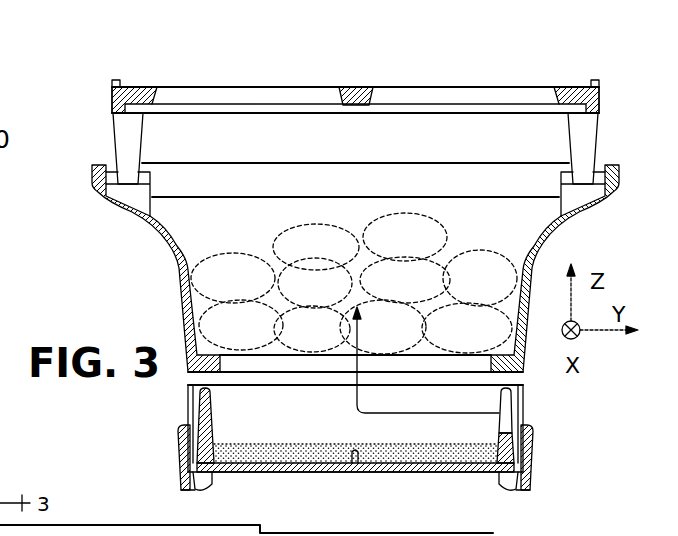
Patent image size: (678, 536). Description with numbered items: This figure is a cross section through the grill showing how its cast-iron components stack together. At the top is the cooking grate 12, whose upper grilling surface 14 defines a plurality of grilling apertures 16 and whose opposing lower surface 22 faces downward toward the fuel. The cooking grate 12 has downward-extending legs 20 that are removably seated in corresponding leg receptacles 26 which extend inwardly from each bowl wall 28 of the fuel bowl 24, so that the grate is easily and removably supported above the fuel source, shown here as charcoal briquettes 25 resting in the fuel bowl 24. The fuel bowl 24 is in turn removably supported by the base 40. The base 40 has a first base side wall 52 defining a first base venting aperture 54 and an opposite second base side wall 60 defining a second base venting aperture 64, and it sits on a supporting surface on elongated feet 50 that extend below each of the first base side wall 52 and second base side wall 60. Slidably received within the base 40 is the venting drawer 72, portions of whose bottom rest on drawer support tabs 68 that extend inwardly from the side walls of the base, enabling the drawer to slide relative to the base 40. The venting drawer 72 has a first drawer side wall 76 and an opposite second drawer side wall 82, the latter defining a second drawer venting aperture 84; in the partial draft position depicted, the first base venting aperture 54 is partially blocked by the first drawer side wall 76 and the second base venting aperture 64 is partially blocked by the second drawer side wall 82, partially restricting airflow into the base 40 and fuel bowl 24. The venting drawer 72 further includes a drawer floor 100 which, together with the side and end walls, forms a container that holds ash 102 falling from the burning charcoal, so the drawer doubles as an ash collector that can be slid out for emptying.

The cooking grate 12 is at (112, 99).
The upper grilling surface 14 is at (300, 86).
The grilling apertures 16 is at (253, 98).
The legs 20 is at (112, 140).
The lower surface 22 is at (312, 106).
The fuel bowl 24 is at (178, 272).
The charcoal briquettes 25 is at (260, 268).
The leg receptacles 26 is at (156, 196).
The bowl wall 28 is at (182, 318).
The base 40 is at (177, 465).
The elongated feet 50 is at (183, 490).
The first base side wall 52 is at (178, 432).
The first base venting aperture 54 is at (190, 403).
The second base side wall 60 is at (535, 437).
The second base venting aperture 64 is at (521, 395).
The drawer support tabs 68 is at (205, 477).
The venting drawer 72 is at (325, 474).
The first drawer side wall 76 is at (212, 403).
The second drawer side wall 82 is at (498, 440).
The second drawer venting aperture 84 is at (500, 397).
The drawer floor 100 is at (302, 452).
The ash 102 is at (410, 445).